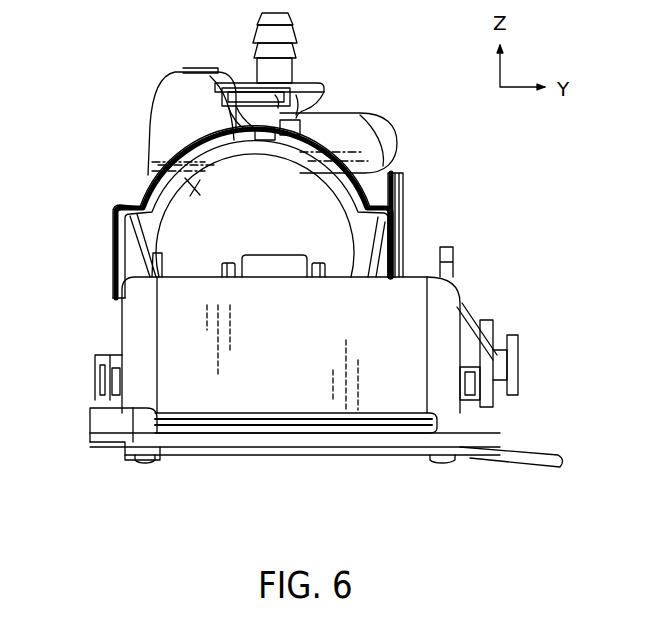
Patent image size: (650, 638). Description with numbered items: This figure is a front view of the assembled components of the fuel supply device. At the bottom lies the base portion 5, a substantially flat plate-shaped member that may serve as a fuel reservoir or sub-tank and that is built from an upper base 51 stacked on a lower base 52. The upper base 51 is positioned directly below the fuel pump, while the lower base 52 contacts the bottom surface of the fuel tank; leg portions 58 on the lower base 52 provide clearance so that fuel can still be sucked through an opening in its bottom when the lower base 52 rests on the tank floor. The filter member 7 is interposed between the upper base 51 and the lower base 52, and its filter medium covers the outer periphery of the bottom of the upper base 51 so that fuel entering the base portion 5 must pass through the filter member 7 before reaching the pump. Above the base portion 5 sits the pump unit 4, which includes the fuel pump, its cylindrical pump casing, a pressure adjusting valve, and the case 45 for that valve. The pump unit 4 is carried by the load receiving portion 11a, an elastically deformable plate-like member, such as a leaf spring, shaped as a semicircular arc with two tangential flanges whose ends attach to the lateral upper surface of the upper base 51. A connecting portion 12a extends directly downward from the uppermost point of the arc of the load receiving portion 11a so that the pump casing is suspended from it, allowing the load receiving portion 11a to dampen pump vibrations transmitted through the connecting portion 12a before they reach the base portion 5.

The pump unit 4 is at (195, 193).
The base portion 5 is at (508, 318).
The filter member 7 is at (328, 427).
The load receiving portion 11a is at (185, 148).
The connecting portion 12a is at (310, 140).
The case for the pressure adjusting valve 45 is at (187, 103).
The upper base 51 is at (390, 327).
The lower base 52 is at (100, 421).
The leg portions 58 is at (140, 463).